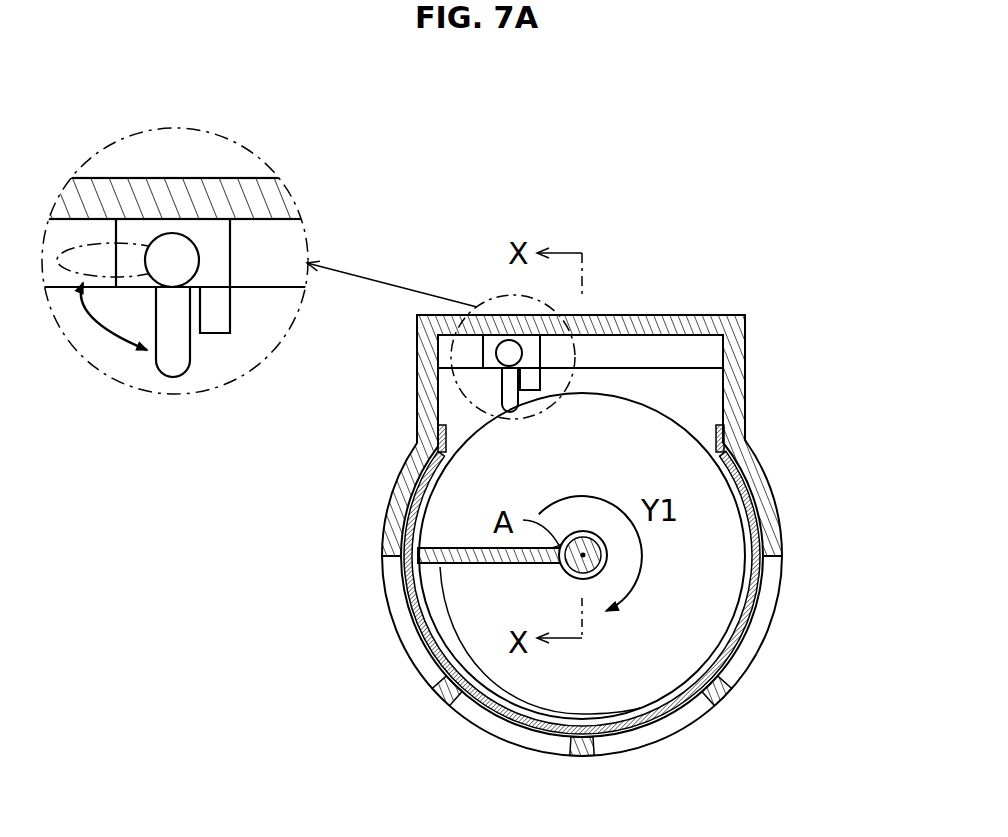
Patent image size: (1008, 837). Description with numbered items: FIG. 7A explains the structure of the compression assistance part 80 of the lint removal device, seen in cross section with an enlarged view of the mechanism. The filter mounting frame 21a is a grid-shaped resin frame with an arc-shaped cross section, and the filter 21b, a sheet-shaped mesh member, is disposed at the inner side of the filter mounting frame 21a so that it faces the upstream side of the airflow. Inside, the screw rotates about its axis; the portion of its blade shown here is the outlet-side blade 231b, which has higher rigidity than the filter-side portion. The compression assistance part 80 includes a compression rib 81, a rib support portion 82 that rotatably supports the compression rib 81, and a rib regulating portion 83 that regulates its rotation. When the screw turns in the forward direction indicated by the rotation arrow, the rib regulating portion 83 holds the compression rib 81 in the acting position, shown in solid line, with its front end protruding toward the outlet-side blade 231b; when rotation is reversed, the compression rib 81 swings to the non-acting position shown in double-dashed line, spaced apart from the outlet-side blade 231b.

The compression assistance part 80 is at (305, 192).
The compression rib 81 is at (177, 357).
The rib support portion 82 is at (187, 260).
The rib regulating portion 83 is at (220, 313).
The filter mounting frame 21a is at (747, 647).
The filter 21b is at (762, 580).
The outlet-side blade 231b is at (645, 670).